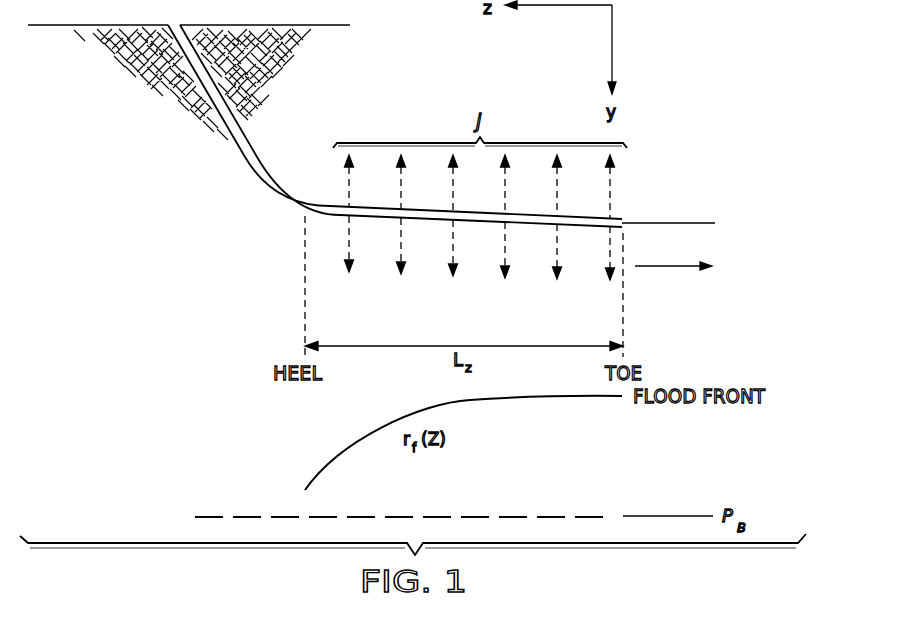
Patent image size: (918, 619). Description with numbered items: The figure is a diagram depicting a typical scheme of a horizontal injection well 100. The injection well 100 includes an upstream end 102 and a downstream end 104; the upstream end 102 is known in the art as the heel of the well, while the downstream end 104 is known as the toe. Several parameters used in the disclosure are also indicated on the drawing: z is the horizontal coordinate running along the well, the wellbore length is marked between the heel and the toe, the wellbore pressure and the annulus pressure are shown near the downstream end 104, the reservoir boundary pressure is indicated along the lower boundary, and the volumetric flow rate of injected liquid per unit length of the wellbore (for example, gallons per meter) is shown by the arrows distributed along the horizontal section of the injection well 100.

The horizontal injection well 100 is at (249, 155).
The upstream end 102 is at (284, 163).
The downstream end 104 is at (628, 217).